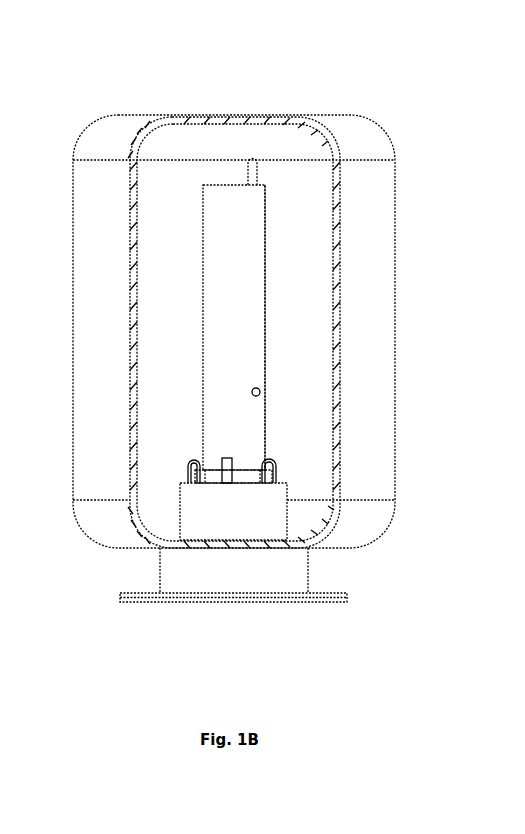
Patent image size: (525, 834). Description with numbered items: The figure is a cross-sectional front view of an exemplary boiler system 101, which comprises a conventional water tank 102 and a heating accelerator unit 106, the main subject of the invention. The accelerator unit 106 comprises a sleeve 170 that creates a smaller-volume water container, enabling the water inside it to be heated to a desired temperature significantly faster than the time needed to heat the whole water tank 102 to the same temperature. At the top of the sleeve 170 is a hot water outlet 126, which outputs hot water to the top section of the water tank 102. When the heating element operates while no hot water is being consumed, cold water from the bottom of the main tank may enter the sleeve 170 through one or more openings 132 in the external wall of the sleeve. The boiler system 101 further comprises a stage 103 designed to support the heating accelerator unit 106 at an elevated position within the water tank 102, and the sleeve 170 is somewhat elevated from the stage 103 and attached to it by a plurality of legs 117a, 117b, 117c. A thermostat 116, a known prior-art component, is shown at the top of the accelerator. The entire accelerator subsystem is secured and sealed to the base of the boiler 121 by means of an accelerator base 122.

The boiler system 101 is at (96, 99).
The water tank 102 is at (397, 190).
The stage 103 is at (212, 520).
The heating accelerator unit 106 is at (197, 299).
The thermostat 116 is at (247, 170).
The leg 117a is at (196, 465).
The leg 117b is at (224, 462).
The leg 117c is at (278, 471).
The base of the boiler 121 is at (142, 603).
The accelerator base 122 is at (124, 594).
The hot water outlet 126 is at (207, 183).
The openings 132 is at (260, 392).
The sleeve 170 is at (265, 302).